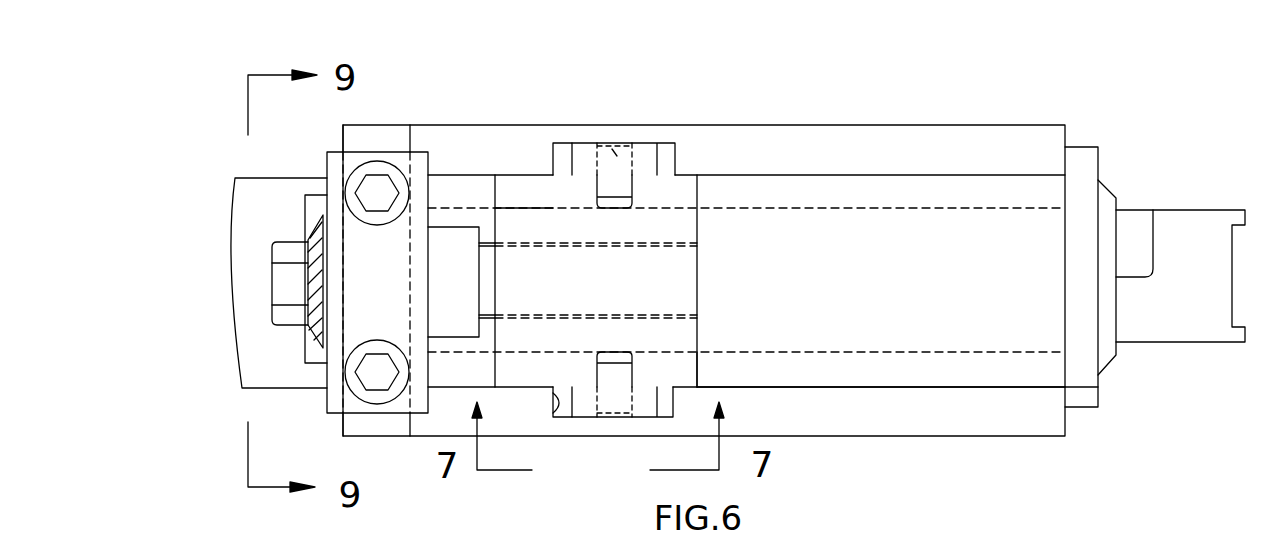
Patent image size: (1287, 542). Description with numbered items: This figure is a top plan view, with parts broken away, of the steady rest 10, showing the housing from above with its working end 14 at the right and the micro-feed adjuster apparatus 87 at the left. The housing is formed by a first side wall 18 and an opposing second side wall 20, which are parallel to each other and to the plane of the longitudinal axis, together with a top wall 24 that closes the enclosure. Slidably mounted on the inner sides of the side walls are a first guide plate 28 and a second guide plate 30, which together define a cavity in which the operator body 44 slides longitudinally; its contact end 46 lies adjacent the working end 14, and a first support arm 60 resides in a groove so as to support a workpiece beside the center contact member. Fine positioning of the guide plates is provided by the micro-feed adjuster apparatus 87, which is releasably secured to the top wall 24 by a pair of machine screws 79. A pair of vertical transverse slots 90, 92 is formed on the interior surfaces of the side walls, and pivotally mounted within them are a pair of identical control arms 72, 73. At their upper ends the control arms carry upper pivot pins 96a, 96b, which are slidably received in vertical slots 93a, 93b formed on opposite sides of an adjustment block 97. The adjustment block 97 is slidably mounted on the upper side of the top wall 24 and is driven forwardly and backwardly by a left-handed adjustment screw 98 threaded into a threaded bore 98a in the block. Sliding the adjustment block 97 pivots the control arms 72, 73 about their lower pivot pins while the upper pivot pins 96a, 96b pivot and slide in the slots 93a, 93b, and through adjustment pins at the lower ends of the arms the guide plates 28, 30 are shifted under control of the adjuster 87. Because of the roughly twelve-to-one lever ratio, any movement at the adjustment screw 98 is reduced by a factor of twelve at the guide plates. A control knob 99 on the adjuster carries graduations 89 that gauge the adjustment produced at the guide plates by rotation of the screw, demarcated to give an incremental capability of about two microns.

The steady rest 10 is at (988, 455).
The working end 14 is at (1087, 163).
The first side wall 18 is at (837, 418).
The second side wall 20 is at (802, 140).
The top wall 24 is at (742, 370).
The first guide plate 28 is at (1047, 368).
The second guide plate 30 is at (870, 190).
The operator body 44 is at (835, 363).
The contact end 46 is at (1116, 355).
The first support arm 60 is at (1193, 196).
The control arm 72 is at (643, 407).
The control arm 73 is at (585, 148).
The machine screws 79 is at (377, 187).
The micro-feed adjuster apparatus 87 is at (312, 367).
The graduations 89 is at (304, 238).
The transverse slot 90 is at (553, 412).
The transverse slot 92 is at (560, 157).
The vertical slot 93a is at (628, 373).
The vertical slot 93b is at (623, 185).
The upper pivot pin 96a is at (612, 410).
The upper pivot pin 96b is at (627, 133).
The adjustment block 97 is at (537, 198).
The adjustment screw 98 is at (680, 290).
The threaded bore 98a is at (658, 247).
The control knob 99 is at (282, 280).